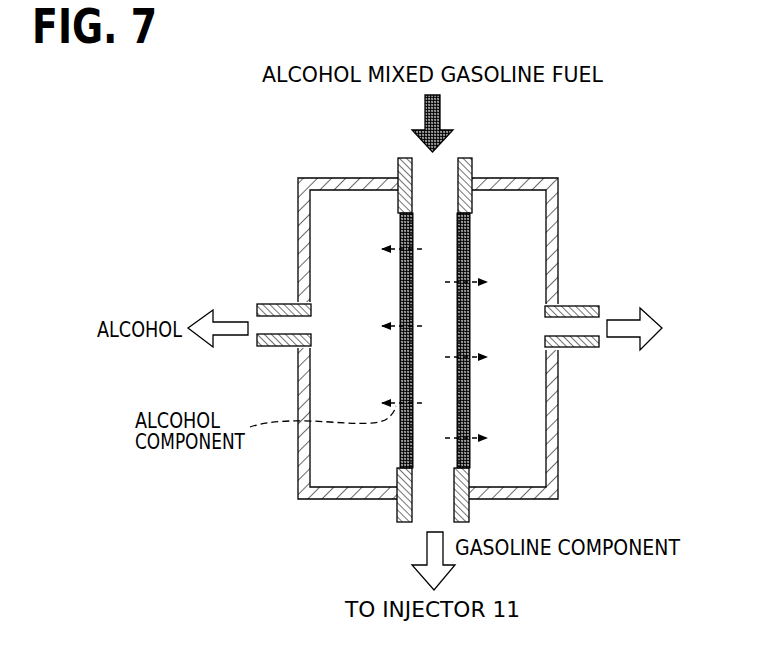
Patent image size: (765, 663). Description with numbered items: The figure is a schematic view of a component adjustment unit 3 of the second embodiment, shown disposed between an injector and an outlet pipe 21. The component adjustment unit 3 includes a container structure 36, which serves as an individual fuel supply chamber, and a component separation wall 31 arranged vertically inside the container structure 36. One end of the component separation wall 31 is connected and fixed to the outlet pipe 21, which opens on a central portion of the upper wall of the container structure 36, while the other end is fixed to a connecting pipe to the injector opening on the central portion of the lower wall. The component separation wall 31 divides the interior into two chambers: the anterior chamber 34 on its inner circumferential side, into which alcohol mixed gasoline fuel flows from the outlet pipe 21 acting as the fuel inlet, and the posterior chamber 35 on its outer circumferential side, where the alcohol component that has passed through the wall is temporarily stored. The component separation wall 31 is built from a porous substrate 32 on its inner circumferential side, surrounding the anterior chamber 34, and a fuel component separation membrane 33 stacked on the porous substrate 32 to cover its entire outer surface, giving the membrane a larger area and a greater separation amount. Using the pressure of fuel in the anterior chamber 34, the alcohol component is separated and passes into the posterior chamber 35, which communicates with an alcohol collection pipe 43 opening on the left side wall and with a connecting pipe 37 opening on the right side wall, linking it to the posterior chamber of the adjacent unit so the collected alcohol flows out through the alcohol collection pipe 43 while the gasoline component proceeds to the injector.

The component adjustment unit 3 is at (436, 337).
The outlet pipe 21 is at (472, 162).
The component separation wall 31 is at (444, 373).
The porous substrate 32 is at (413, 236).
The fuel component separation membrane 33 is at (400, 447).
The anterior chamber 34 is at (435, 458).
The posterior chamber 35 is at (530, 432).
The container structure 36 is at (551, 226).
The connecting pipe 37 is at (580, 307).
The alcohol collection pipe 43 is at (278, 304).